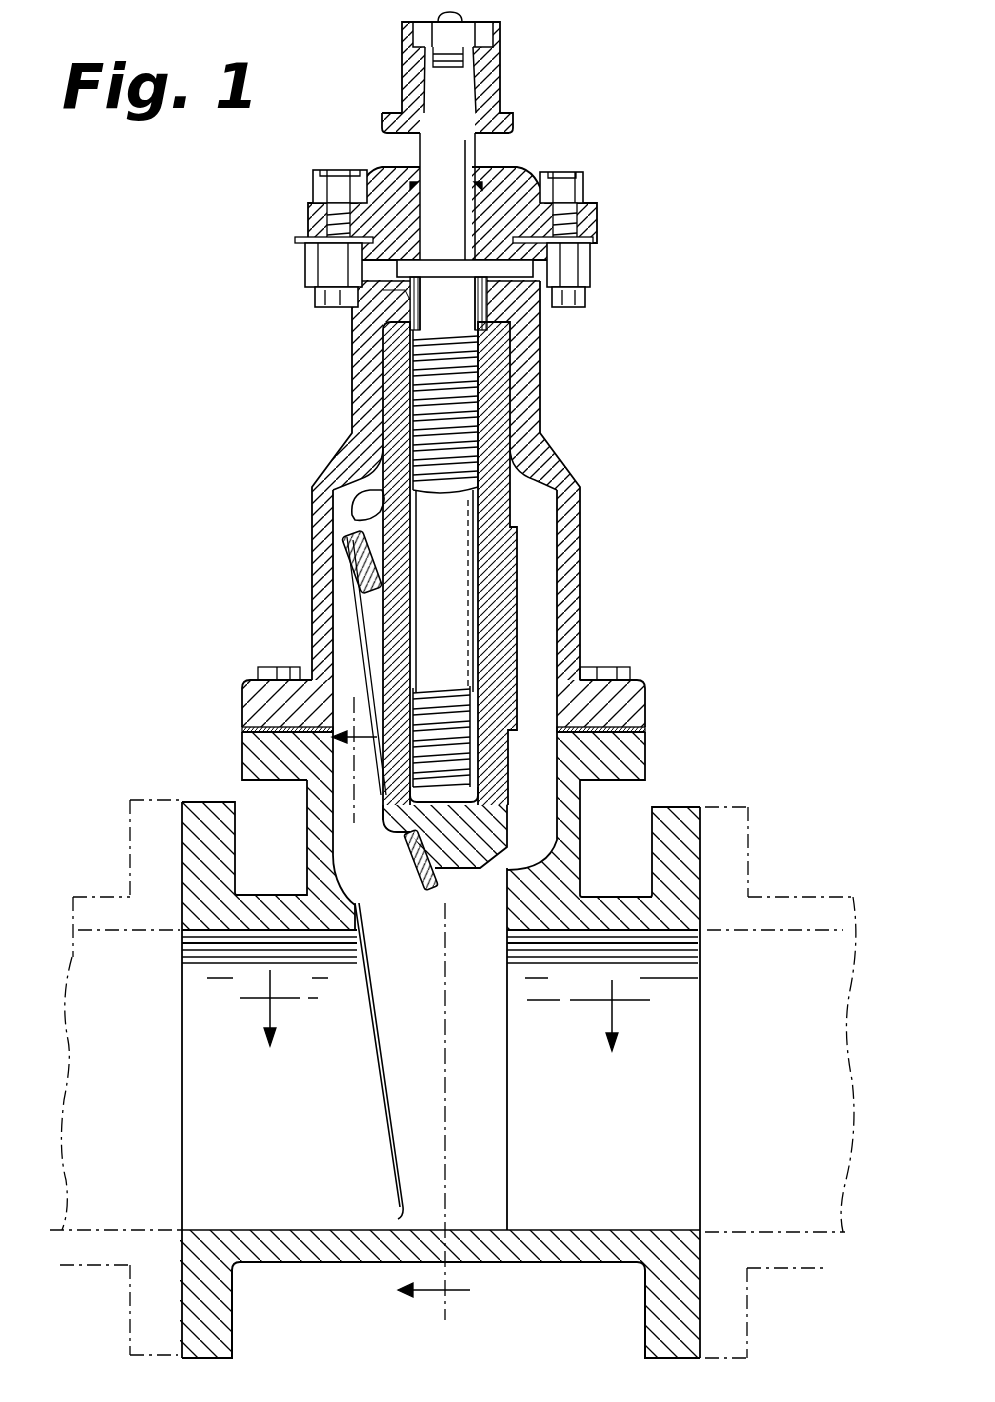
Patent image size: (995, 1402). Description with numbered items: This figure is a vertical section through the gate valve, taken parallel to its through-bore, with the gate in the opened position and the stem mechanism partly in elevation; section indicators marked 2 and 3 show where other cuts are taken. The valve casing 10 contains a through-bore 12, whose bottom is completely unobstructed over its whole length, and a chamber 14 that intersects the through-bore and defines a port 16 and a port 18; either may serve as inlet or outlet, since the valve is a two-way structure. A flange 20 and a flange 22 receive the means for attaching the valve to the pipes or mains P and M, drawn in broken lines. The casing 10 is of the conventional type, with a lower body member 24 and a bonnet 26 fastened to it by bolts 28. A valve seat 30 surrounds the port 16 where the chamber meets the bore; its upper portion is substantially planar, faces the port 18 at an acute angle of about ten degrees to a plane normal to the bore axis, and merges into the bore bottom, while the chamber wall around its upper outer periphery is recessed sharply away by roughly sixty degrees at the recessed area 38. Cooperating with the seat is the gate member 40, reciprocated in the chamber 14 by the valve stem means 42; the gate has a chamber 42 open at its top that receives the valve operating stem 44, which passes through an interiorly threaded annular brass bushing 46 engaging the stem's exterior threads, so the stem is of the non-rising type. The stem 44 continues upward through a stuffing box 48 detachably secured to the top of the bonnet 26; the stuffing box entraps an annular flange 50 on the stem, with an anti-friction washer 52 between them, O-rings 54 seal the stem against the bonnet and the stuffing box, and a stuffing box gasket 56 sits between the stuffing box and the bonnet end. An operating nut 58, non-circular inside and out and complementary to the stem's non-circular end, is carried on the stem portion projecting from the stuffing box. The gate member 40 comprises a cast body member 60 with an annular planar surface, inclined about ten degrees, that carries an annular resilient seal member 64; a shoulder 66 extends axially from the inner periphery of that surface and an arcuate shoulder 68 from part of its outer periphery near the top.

The valve casing 10 is at (453, 685).
The through-bore 12 is at (667, 1100).
The chamber 14 is at (548, 826).
The port 16 is at (380, 1064).
The port 18 is at (505, 1045).
The flange 20 is at (208, 802).
The flange 22 is at (680, 807).
The lower body member 24 is at (643, 765).
The bonnet 26 is at (643, 712).
The bolts 28 is at (598, 667).
The valve seat 30 is at (357, 921).
The recessed area 38 is at (357, 886).
The gate member 40 is at (548, 472).
The valve stem means 42 is at (488, 203).
The valve operating stem 44 is at (482, 370).
The annular brass bushing 46 is at (490, 340).
The stuffing box 48 is at (397, 166).
The annular flange 50 is at (374, 292).
The anti-friction washer 52 is at (520, 241).
The O-rings 54 is at (483, 163).
The stuffing box gasket 56 is at (312, 273).
The operating nut 58 is at (500, 50).
The cast body member 60 is at (355, 500).
The annular resilient seal member 64 is at (352, 552).
The shoulder 66 is at (405, 850).
The arcuate shoulder 68 is at (355, 513).
The pipe or main P is at (115, 795).
The pipe or main M is at (755, 826).
The section line 2 is at (414, 1008).
The section line 3 is at (445, 1026).